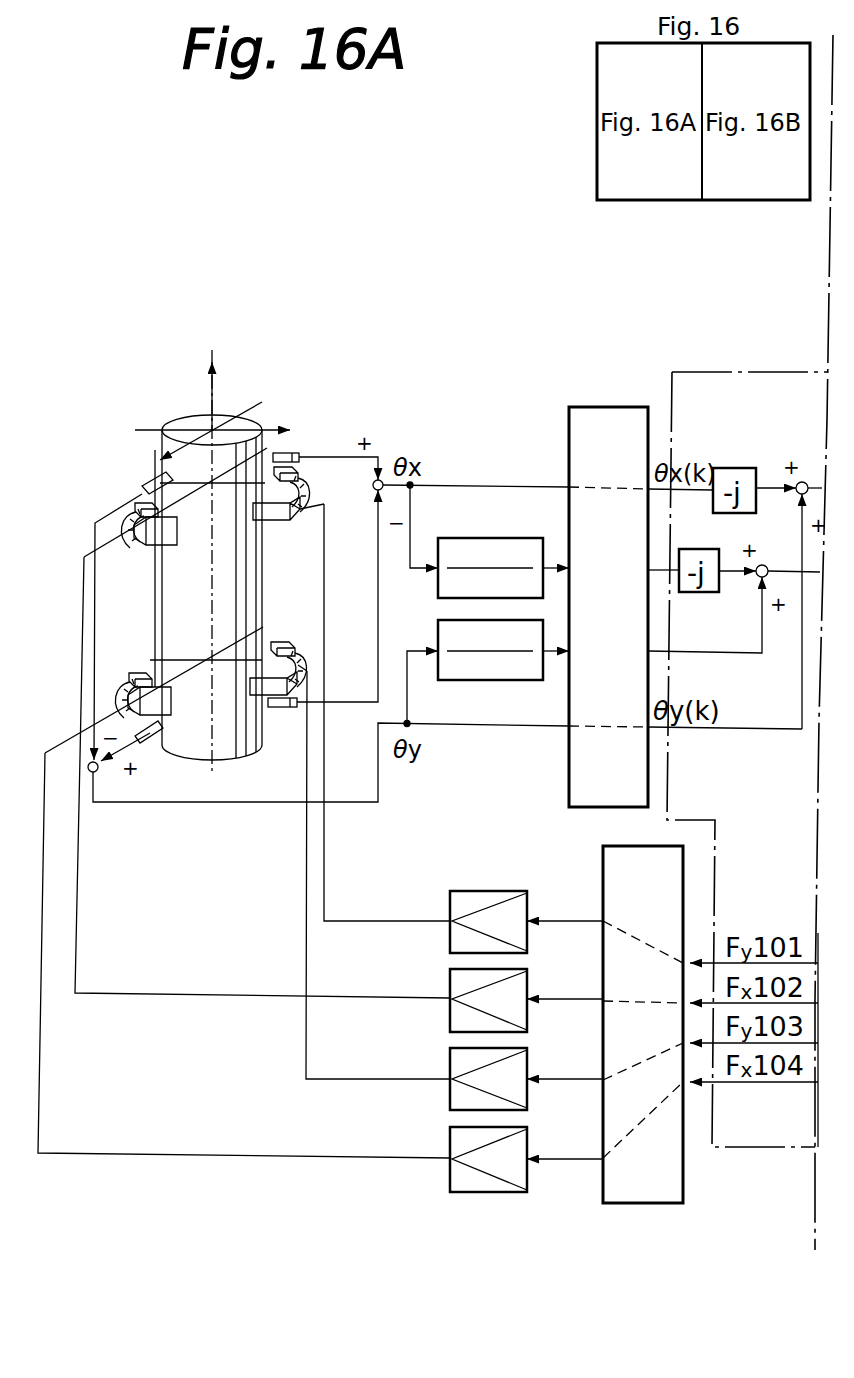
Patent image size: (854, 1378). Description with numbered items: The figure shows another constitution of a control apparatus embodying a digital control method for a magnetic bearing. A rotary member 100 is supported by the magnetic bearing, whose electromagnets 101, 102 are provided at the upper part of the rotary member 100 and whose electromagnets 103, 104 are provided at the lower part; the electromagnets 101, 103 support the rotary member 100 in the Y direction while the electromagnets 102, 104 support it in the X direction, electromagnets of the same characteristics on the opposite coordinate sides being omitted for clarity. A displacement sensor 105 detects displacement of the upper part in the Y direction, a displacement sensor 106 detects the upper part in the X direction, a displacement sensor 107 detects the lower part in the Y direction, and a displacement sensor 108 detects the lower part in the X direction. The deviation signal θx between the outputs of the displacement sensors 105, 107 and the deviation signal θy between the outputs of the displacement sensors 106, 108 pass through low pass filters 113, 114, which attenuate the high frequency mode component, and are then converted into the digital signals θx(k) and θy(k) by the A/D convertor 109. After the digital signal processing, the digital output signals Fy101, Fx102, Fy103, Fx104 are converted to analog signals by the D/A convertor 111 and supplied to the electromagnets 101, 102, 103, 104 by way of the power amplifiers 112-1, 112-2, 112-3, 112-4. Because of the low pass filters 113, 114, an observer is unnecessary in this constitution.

The rotary member 100 is at (219, 411).
The electromagnet 101 is at (289, 521).
The electromagnet 102 is at (128, 550).
The electromagnet 103 is at (289, 645).
The electromagnet 104 is at (122, 668).
The displacement sensor 105 is at (301, 453).
The displacement sensor 106 is at (142, 488).
The displacement sensor 107 is at (284, 708).
The displacement sensor 108 is at (149, 745).
The A/D convertor 109 is at (607, 407).
The D/A convertor 111 is at (651, 1203).
The power amplifier 112-1 is at (548, 881).
The power amplifier 112-2 is at (528, 984).
The power amplifier 112-3 is at (528, 1066).
The power amplifier 112-4 is at (544, 1140).
The low pass filter 113 is at (494, 538).
The low pass filter 114 is at (496, 680).